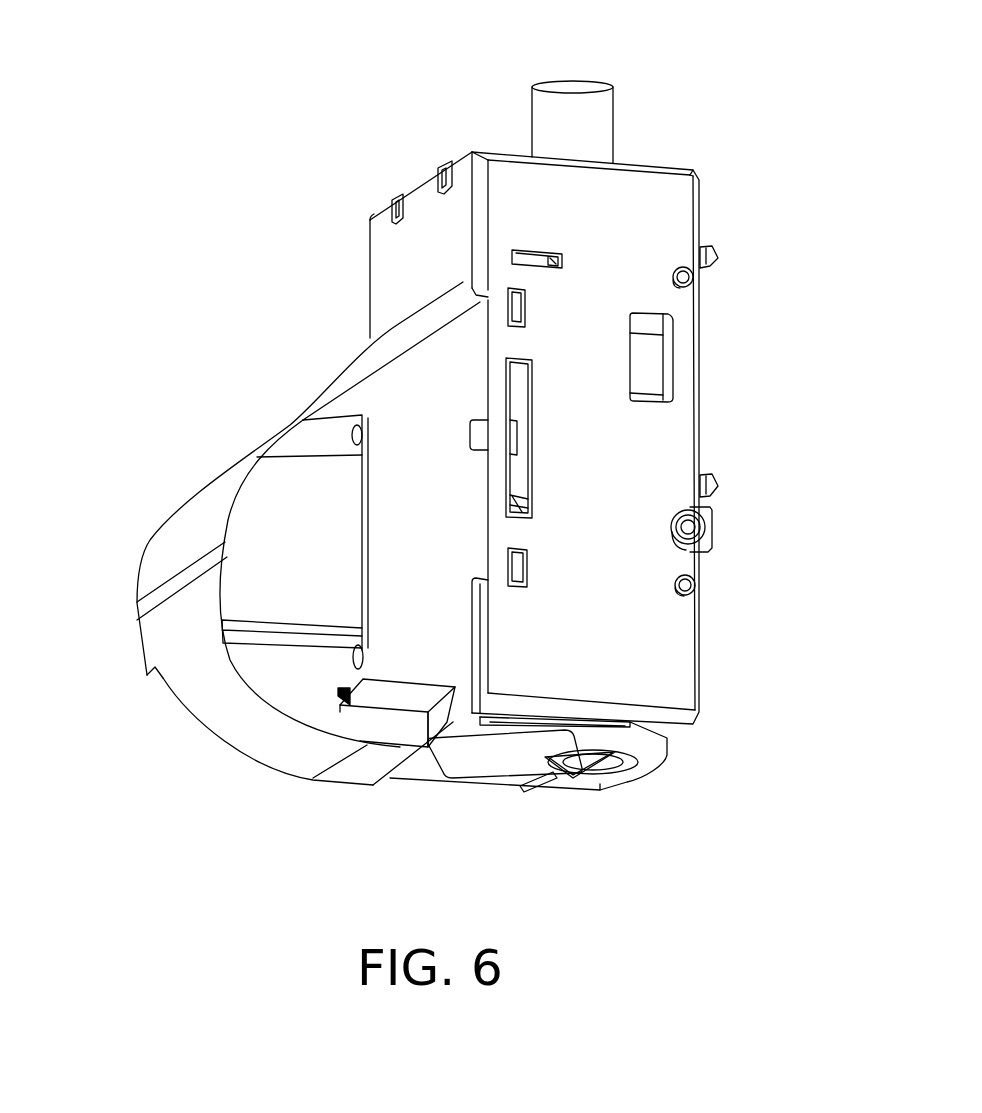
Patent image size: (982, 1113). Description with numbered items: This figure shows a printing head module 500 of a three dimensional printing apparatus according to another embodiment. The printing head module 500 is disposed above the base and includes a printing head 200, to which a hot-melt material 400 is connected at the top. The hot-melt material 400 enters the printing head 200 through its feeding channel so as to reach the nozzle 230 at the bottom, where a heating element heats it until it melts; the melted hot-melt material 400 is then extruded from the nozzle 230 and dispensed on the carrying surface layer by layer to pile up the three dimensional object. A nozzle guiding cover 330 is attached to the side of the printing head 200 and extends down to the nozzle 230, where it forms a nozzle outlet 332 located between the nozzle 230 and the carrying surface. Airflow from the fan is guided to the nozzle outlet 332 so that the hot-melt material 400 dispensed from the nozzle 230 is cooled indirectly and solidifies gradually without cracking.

The printing head module 500 is at (435, 501).
The hot-melt material 400 is at (602, 108).
The printing head 200 is at (700, 407).
The nozzle guiding cover 330 is at (182, 552).
The nozzle outlet 332 is at (435, 738).
The nozzle 230 is at (562, 790).